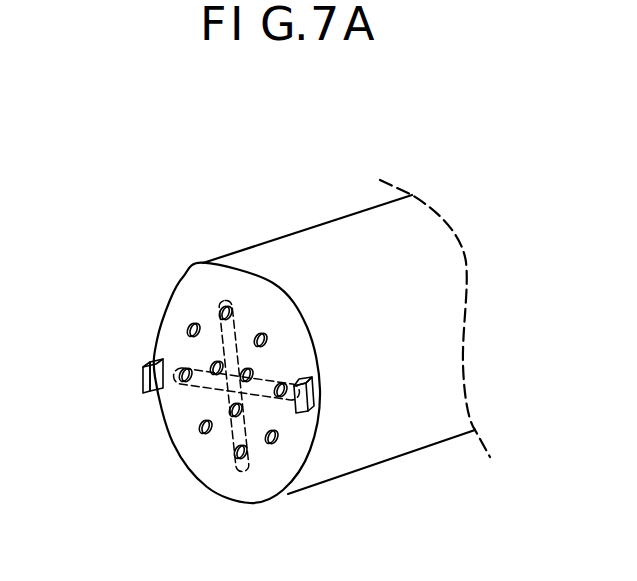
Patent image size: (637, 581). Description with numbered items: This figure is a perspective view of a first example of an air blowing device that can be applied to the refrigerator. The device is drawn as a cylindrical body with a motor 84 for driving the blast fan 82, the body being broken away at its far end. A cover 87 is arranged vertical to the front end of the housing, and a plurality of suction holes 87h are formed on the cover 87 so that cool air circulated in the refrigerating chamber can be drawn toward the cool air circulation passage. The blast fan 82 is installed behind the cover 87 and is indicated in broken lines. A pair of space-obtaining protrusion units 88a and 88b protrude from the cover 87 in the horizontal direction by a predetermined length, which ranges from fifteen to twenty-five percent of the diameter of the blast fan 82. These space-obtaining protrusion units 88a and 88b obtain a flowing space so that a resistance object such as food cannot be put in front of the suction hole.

The motor 84 is at (305, 243).
The cover 87 is at (157, 324).
The blast fan 82 is at (222, 332).
The suction holes 87h is at (201, 432).
The space-obtaining protrusion unit 88a is at (143, 381).
The space-obtaining protrusion unit 88b is at (310, 405).